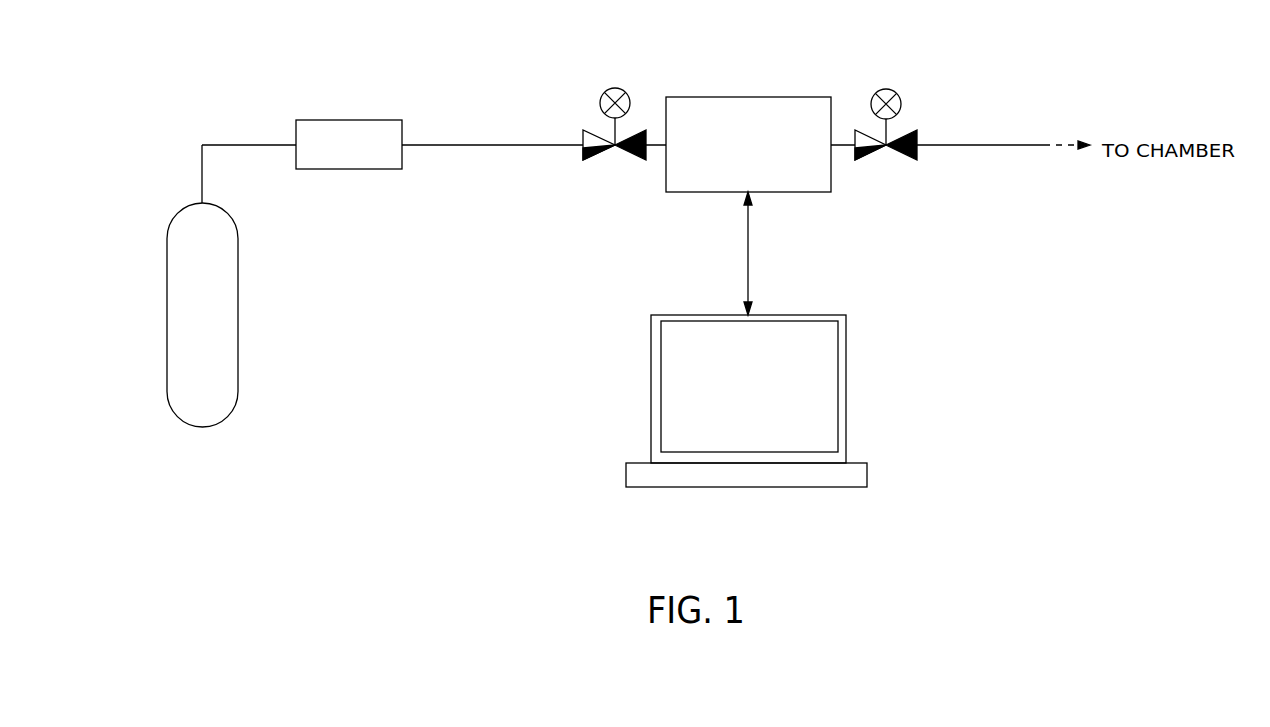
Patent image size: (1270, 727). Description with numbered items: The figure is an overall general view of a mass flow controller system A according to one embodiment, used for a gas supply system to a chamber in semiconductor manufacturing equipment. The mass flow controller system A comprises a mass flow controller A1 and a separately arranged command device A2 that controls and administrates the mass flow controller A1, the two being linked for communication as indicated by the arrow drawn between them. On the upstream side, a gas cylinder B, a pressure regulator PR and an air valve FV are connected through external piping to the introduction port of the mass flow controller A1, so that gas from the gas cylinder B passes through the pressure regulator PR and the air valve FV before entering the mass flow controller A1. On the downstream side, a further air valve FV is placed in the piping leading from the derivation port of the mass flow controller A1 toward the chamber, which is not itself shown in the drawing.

The mass flow controller system A is at (608, 259).
The mass flow controller A1 is at (747, 97).
The command device A2 is at (805, 315).
The gas cylinder B is at (238, 315).
The pressure regulator PR is at (350, 120).
The air valve FV is at (605, 92).